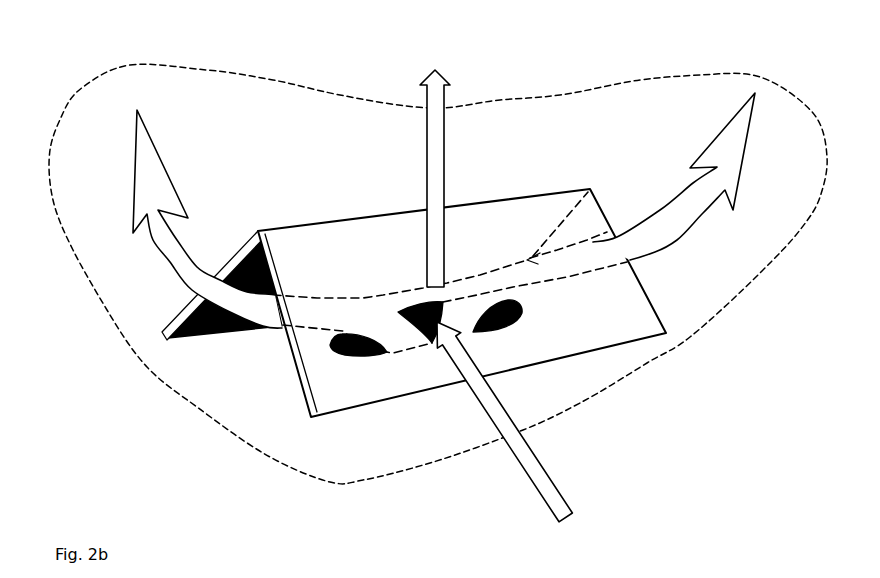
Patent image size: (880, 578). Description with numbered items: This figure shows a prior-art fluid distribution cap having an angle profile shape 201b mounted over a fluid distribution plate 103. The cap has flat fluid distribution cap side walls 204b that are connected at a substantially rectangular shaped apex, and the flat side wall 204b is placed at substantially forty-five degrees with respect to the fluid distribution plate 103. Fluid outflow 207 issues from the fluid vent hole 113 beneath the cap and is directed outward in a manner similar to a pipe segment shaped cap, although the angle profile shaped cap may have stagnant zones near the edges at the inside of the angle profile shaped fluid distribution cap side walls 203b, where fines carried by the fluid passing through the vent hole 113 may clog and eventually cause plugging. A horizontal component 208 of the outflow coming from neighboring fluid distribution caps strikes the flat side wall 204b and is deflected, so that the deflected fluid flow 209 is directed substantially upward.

The fluid distribution plate 103 is at (137, 290).
The angle profile shaped fluid distribution cap 201b is at (337, 220).
The angle profile shaped fluid distribution cap side walls 203b is at (257, 248).
The fluid distribution cap side wall 204b is at (593, 322).
The fluid outflow 207 is at (152, 140).
The horizontal component of the outflow 208 is at (517, 432).
The deflected fluid flow 209 is at (436, 165).
The fluid vent hole 113 is at (363, 352).